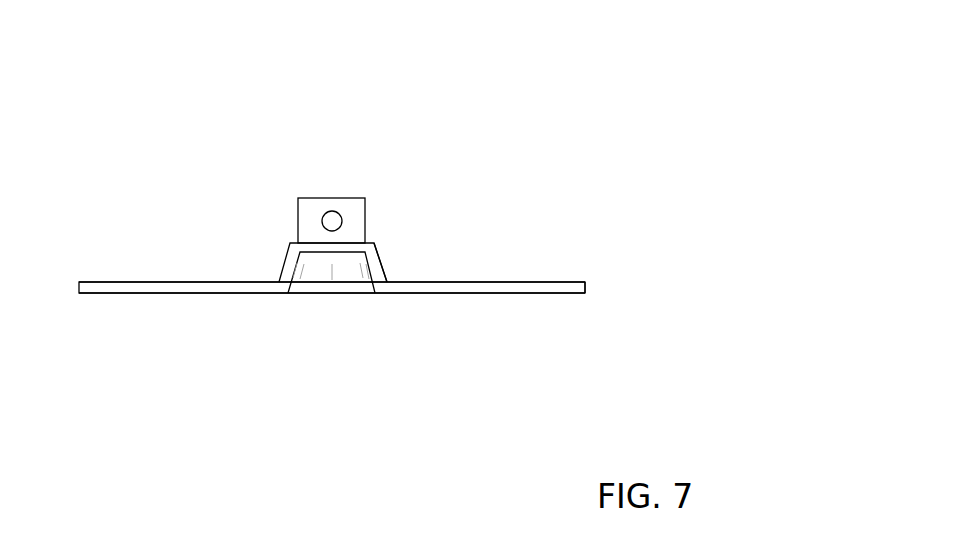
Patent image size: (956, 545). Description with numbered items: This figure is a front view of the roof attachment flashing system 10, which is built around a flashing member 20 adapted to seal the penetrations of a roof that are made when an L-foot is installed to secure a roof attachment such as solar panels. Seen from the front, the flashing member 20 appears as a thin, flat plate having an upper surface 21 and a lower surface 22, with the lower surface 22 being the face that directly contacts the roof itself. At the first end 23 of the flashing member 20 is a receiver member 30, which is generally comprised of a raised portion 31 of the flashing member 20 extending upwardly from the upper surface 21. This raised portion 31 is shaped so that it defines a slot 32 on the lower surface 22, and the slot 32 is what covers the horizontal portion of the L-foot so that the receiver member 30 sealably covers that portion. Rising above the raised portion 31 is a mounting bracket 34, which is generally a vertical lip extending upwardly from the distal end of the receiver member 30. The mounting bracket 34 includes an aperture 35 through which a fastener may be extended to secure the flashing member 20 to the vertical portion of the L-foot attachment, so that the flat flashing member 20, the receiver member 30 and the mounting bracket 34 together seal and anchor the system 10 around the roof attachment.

The roof attachment flashing system 10 is at (531, 95).
The flashing member 20 is at (232, 271).
The upper surface 21 is at (153, 282).
The lower surface 22 is at (207, 293).
The first end 23 is at (523, 293).
The receiver member 30 is at (362, 240).
The raised portion 31 is at (380, 261).
The slot 32 is at (346, 273).
The mounting bracket 34 is at (357, 198).
The aperture 35 is at (331, 211).